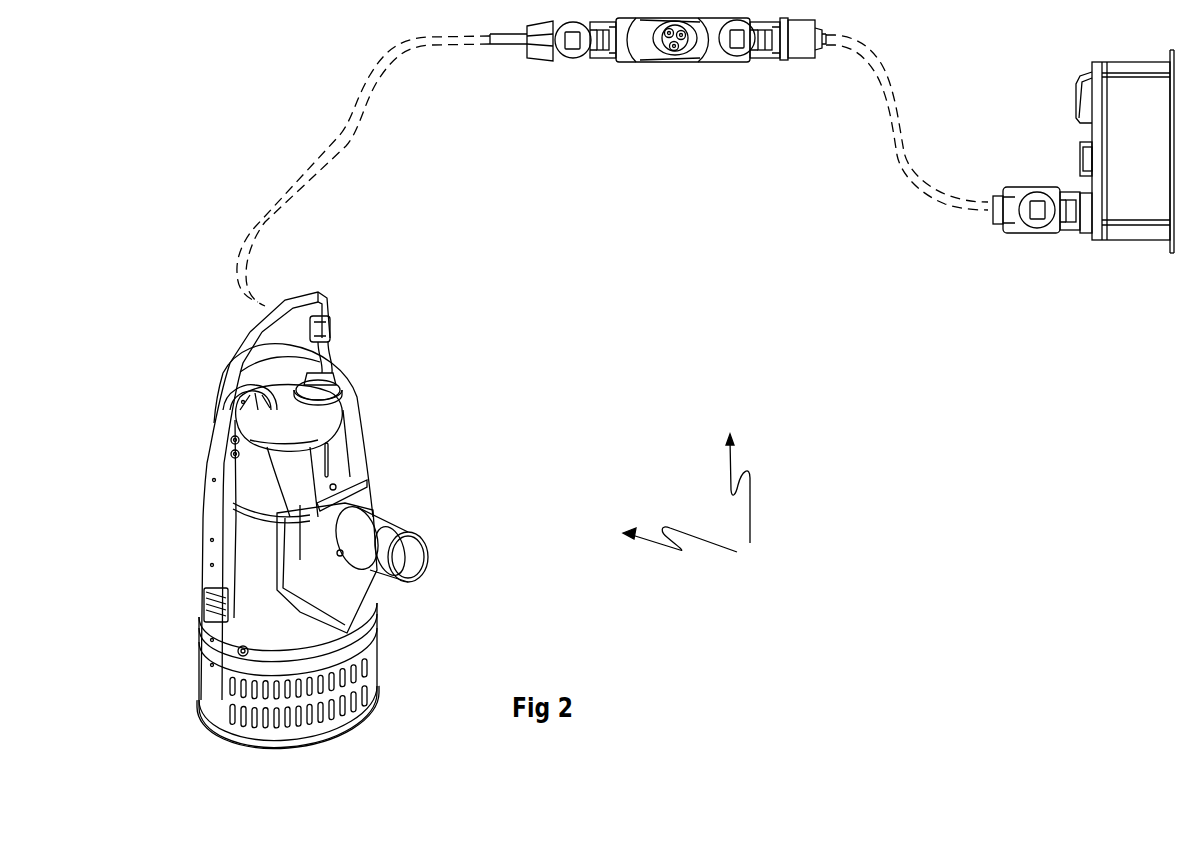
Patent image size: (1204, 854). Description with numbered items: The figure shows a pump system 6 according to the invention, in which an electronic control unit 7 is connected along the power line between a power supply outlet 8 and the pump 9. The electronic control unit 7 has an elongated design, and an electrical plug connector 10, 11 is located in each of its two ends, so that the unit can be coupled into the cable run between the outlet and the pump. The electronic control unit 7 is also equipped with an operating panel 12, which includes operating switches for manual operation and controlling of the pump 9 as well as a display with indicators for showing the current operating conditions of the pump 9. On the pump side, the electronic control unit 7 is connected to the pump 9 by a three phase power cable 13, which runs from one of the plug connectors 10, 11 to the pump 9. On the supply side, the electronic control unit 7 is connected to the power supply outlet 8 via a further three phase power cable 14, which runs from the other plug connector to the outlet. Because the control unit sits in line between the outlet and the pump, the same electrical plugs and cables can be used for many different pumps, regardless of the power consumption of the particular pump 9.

The pump system 6 is at (690, 502).
The electronic control unit 7 is at (631, 63).
The power supply outlet 8 is at (1072, 228).
The pump 9 is at (355, 427).
The electrical plug connector 10 is at (595, 62).
The electrical plug connector 11 is at (768, 60).
The operating panel 12 is at (663, 57).
The three phase power cable 13 is at (343, 143).
The further three phase power cable 14 is at (900, 147).